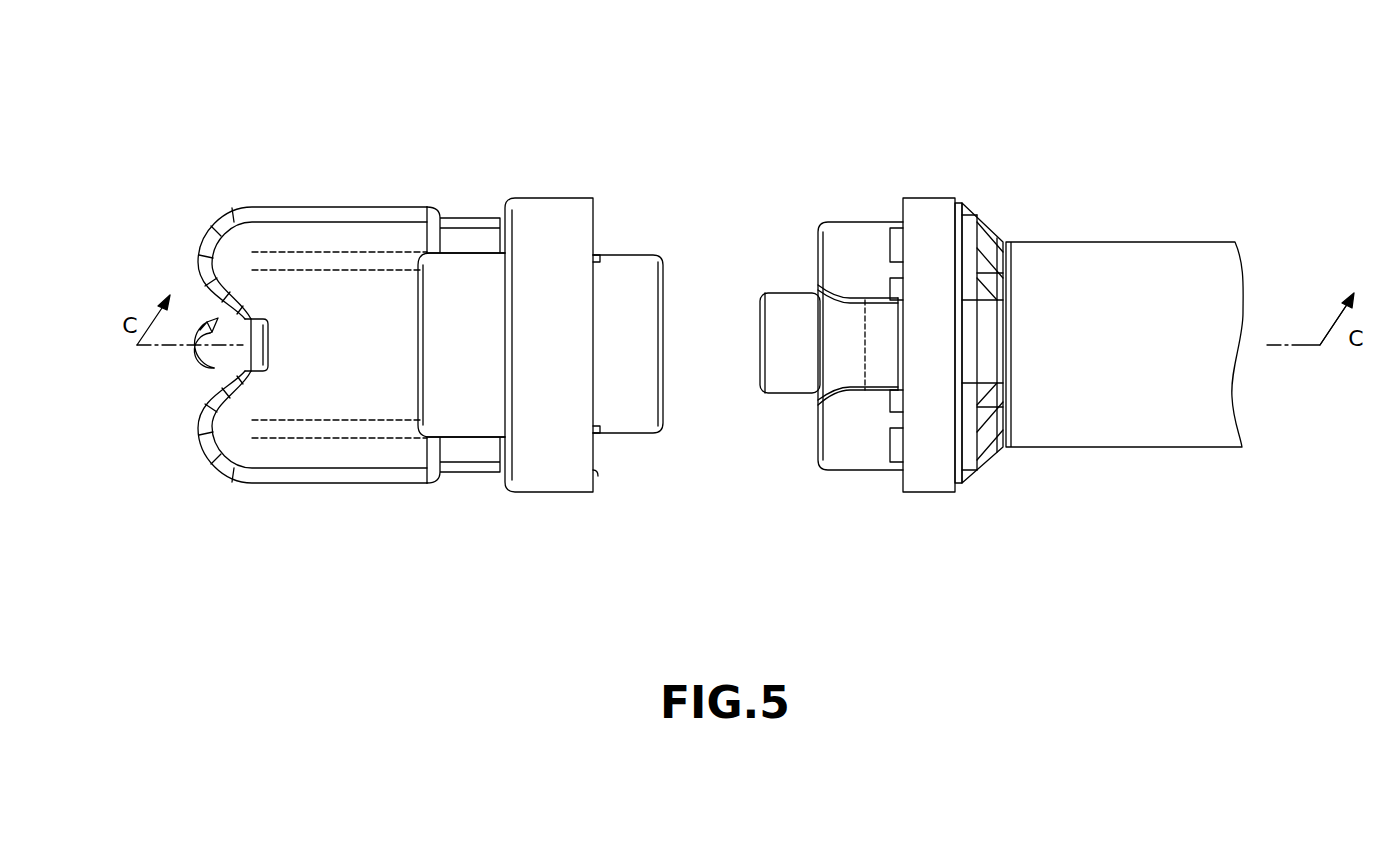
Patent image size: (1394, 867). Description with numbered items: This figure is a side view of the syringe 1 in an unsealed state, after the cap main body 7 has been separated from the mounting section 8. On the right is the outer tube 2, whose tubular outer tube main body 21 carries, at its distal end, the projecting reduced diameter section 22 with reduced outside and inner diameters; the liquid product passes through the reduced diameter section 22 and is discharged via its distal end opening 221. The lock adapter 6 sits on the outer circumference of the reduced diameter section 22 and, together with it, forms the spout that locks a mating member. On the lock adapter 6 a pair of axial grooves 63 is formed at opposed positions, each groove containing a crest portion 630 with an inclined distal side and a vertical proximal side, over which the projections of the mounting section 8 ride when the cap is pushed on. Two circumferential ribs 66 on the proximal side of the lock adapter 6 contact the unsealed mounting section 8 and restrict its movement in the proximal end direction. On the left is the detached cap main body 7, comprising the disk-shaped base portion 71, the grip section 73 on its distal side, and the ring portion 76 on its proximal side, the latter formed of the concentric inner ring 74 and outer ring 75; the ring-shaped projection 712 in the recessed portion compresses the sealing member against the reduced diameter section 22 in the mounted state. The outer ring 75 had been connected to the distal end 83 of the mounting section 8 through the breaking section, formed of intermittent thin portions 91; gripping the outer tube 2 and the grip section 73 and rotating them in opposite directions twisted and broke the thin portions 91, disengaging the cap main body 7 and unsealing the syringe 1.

The syringe 1 is at (851, 287).
The outer tube 2 is at (1124, 276).
The outer tube main body 21 is at (1098, 262).
The reduced diameter section 22 is at (760, 335).
The distal end opening 221 is at (760, 335).
The lock adapter 6 is at (830, 341).
The grooves 63 is at (834, 375).
The crest portion 630 is at (883, 368).
The ribs 66 is at (958, 213).
The cap main body 7 is at (591, 375).
The base portion 71 is at (470, 275).
The grip section 73 is at (327, 258).
The inner ring 74 is at (626, 420).
The outer ring 75 is at (543, 475).
The ring portion 76 is at (518, 588).
The ring-shaped projection 712 is at (598, 470).
The mounting section 8 is at (921, 340).
The distal end 83 is at (903, 477).
The thin portions 91 is at (890, 245).